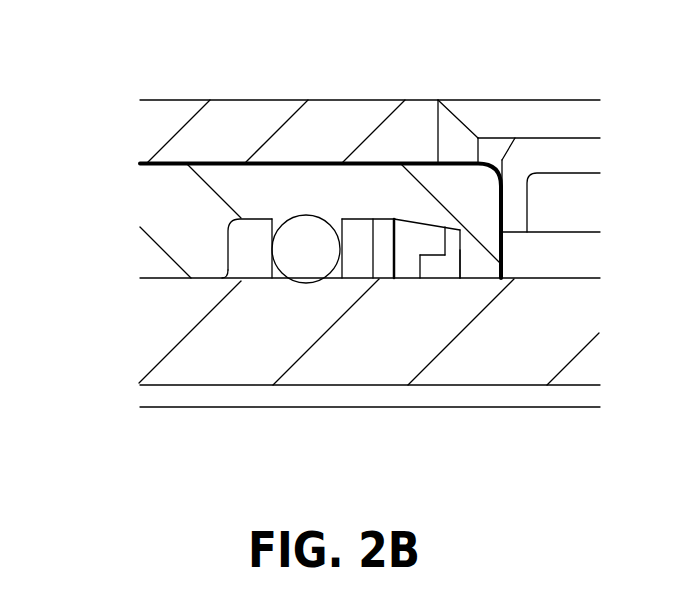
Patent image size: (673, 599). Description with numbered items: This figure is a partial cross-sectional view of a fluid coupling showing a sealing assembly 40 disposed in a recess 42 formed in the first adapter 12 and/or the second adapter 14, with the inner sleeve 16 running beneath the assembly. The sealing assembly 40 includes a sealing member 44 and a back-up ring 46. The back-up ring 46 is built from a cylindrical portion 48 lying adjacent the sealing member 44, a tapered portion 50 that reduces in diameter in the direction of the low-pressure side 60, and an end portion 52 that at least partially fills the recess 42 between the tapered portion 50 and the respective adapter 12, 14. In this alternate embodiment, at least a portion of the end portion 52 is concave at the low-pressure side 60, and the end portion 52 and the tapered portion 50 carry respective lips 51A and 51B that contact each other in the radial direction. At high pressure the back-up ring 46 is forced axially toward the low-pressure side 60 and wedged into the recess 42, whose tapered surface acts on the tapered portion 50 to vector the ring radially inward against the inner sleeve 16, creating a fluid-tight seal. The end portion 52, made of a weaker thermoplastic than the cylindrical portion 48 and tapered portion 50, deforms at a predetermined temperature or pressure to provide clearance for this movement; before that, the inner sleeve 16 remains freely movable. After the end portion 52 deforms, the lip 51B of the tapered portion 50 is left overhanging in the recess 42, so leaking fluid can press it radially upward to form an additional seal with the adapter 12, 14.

The first adapter 12 is at (323, 189).
The second adapter 14 is at (170, 218).
The inner sleeve 16 is at (178, 357).
The sealing assembly 40 is at (321, 238).
The recess 42 is at (280, 220).
The sealing member 44 is at (315, 228).
The back-up ring 46 is at (461, 194).
The cylindrical portion 48 is at (375, 240).
The tapered portion 50 is at (449, 241).
The lip 51A is at (437, 268).
The lip 51B is at (430, 242).
The end portion 52 is at (471, 257).
The low-pressure side 60 is at (500, 214).